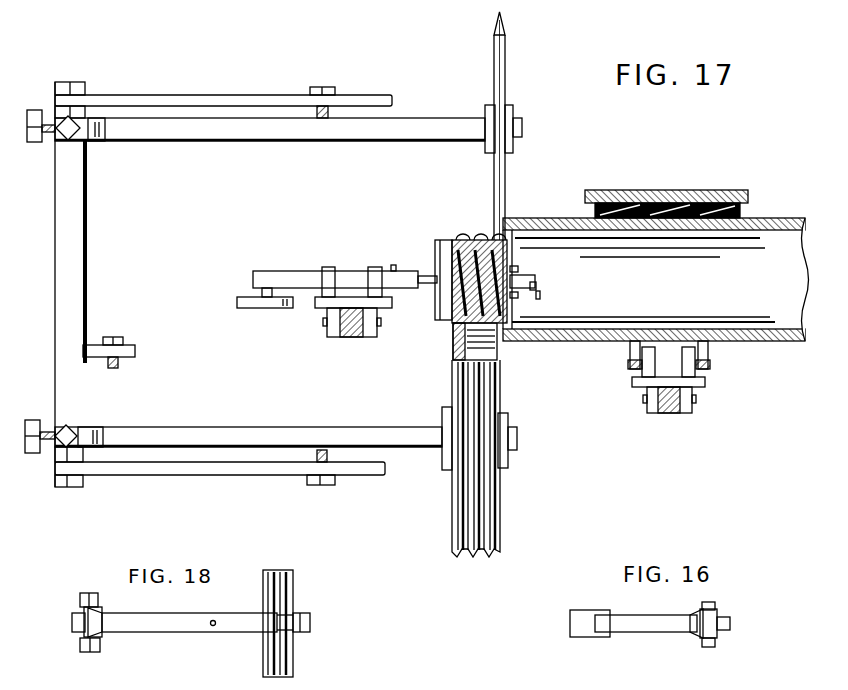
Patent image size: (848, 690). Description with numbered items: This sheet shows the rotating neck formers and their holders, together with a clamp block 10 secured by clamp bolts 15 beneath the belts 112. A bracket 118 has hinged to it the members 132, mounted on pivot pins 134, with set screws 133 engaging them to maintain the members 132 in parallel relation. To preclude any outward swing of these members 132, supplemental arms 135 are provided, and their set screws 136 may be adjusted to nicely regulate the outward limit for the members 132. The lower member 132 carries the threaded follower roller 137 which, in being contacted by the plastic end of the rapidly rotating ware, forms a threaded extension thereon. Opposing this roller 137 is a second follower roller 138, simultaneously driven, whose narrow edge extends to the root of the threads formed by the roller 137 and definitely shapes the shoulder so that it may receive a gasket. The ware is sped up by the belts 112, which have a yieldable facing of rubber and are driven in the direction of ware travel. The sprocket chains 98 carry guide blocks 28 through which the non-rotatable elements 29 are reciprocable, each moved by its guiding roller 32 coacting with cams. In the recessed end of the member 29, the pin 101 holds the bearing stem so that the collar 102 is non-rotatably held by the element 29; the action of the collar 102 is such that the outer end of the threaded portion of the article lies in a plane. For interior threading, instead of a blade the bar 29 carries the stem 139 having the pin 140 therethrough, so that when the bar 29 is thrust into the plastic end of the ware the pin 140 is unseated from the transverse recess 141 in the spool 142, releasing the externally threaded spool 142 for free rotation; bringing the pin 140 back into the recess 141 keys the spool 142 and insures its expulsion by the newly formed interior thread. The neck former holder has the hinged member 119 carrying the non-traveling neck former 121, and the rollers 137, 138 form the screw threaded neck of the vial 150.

In FIG. 17, the clamp block 10 is at (670, 414).
In FIG. 17, the clamp bolts 15 is at (635, 366).
In FIG. 17, the guide block 28 is at (328, 268).
In FIG. 17, the non-rotatable element 29 is at (292, 271).
In FIG. 17, the guiding roller 32 is at (237, 301).
In FIG. 17, the sprocket chain 98 is at (356, 337).
In FIG. 17, the pin 101 is at (392, 265).
In FIG. 17, the collar 102 is at (440, 240).
In FIG. 17, the belt 112 is at (588, 191).
In FIG. 17, the bracket 118 is at (90, 262).
In FIG. 16, the bracket 118 is at (722, 615).
In FIG. 16, the upper member 119 is at (640, 633).
In FIG. 16, the neck former 121 is at (574, 638).
In FIG. 17, the member 132 is at (160, 142).
In FIG. 18, the member 132 is at (165, 633).
In FIG. 17, the set screw 133 is at (33, 143).
In FIG. 18, the set screw 133 is at (74, 633).
In FIG. 17, the pivot pin 134 is at (80, 136).
In FIG. 18, the pivot pin 134 is at (88, 652).
In FIG. 17, the supplemental arm 135 is at (258, 95).
In FIG. 17, the set screw 136 is at (335, 88).
In FIG. 17, the threaded follower roller 137 is at (452, 510).
In FIG. 18, the threaded follower roller 137 is at (266, 595).
In FIG. 17, the second follower roller 138 is at (506, 38).
In FIG. 18, the second follower roller 138 is at (292, 650).
In FIG. 17, the stem 139 is at (528, 280).
In FIG. 17, the pin 140 is at (540, 295).
In FIG. 17, the transverse slot or recess 141 is at (518, 276).
In FIG. 17, the spool 142 is at (440, 318).
In FIG. 17, the vial 150 is at (520, 338).
In FIG. 18, the vial 150 is at (312, 622).